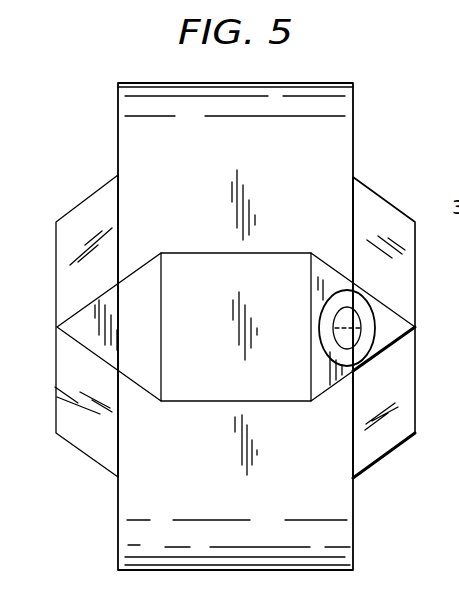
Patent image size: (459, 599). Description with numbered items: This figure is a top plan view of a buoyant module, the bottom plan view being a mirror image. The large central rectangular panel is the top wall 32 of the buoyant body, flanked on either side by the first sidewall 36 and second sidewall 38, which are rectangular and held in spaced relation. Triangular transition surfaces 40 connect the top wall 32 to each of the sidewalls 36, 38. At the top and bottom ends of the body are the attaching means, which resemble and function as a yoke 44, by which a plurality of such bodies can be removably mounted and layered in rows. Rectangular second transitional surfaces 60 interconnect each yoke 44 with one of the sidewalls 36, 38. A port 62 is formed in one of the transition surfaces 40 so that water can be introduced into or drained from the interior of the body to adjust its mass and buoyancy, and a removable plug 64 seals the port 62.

The top wall 32 is at (215, 360).
The first sidewall 36 is at (416, 229).
The second sidewall 38 is at (56, 253).
The transition surfaces 40 is at (150, 318).
The yoke 44 is at (344, 99).
The second transitional surfaces 60 is at (93, 207).
The port 62 is at (360, 327).
The removable plug 64 is at (368, 332).